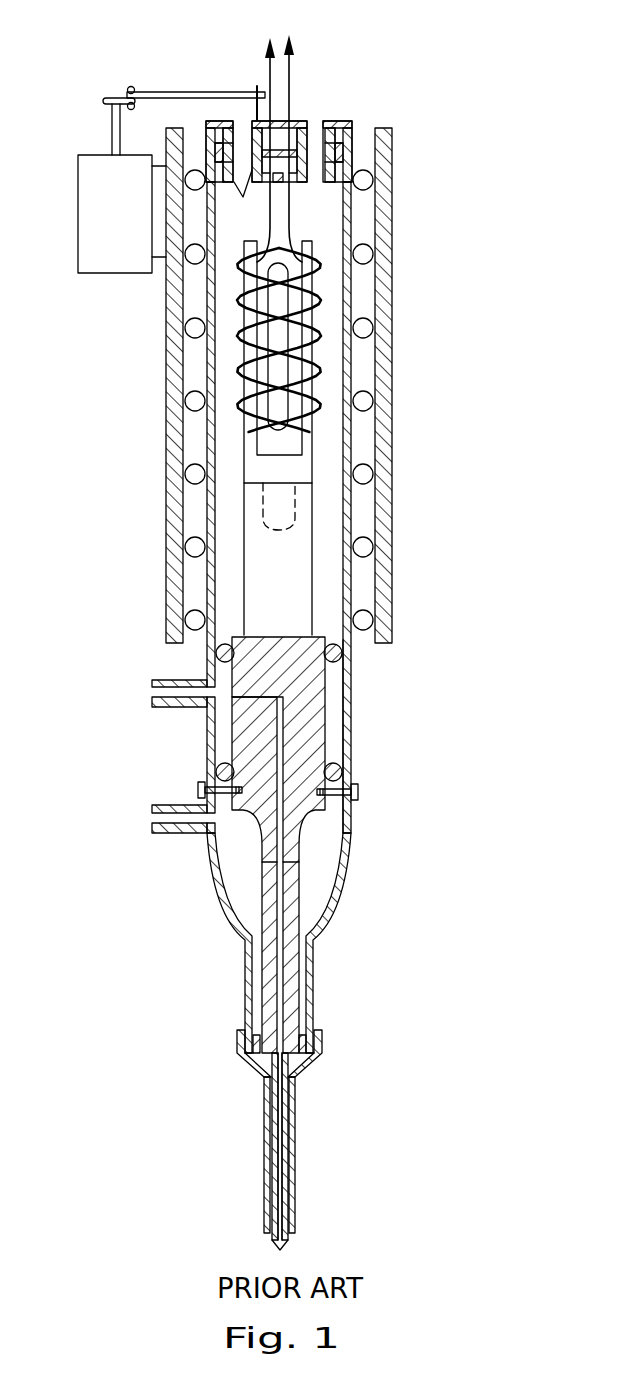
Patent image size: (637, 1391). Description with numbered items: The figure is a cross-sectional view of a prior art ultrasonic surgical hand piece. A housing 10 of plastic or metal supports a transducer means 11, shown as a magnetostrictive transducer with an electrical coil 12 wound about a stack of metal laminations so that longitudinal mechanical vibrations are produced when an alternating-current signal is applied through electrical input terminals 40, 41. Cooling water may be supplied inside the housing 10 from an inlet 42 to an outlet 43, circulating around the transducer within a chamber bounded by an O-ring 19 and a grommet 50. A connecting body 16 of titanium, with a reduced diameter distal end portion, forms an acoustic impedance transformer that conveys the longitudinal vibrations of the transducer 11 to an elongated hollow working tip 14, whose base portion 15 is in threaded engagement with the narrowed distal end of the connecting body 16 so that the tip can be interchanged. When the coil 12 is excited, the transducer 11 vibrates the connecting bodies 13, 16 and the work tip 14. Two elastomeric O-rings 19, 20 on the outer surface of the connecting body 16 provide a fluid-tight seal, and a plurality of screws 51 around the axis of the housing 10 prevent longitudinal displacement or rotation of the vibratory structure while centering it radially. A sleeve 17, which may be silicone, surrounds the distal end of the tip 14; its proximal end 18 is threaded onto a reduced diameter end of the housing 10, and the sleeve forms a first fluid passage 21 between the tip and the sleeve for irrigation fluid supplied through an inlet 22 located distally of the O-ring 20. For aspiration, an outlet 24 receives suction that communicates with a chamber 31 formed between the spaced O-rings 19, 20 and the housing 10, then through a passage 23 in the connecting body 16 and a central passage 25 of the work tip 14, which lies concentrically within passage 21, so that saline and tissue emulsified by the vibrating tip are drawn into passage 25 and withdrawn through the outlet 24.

The housing 10 is at (352, 700).
The transducer means 11 is at (315, 380).
The electrical coil 12 is at (317, 275).
The connecting body 13 is at (313, 598).
The working tip 14 is at (288, 1242).
The base portion 15 is at (296, 1077).
The connecting body 16 is at (327, 720).
The sleeve 17 is at (291, 1137).
The proximal end of sleeve 18 is at (320, 1062).
The O-ring 19 is at (338, 658).
The O-ring 20 is at (340, 775).
The first fluid passage 21 is at (280, 1160).
The inlet 22 is at (152, 815).
The passage 23 is at (290, 968).
The outlet 24 is at (152, 690).
The central passage 25 is at (280, 1215).
The chamber 31 is at (393, 412).
The electrical input terminal 40 is at (268, 44).
The electrical input terminal 41 is at (291, 44).
The inlet 42 is at (243, 120).
The outlet 43 is at (313, 121).
The grommet 50 is at (337, 150).
The screws 51 is at (200, 787).